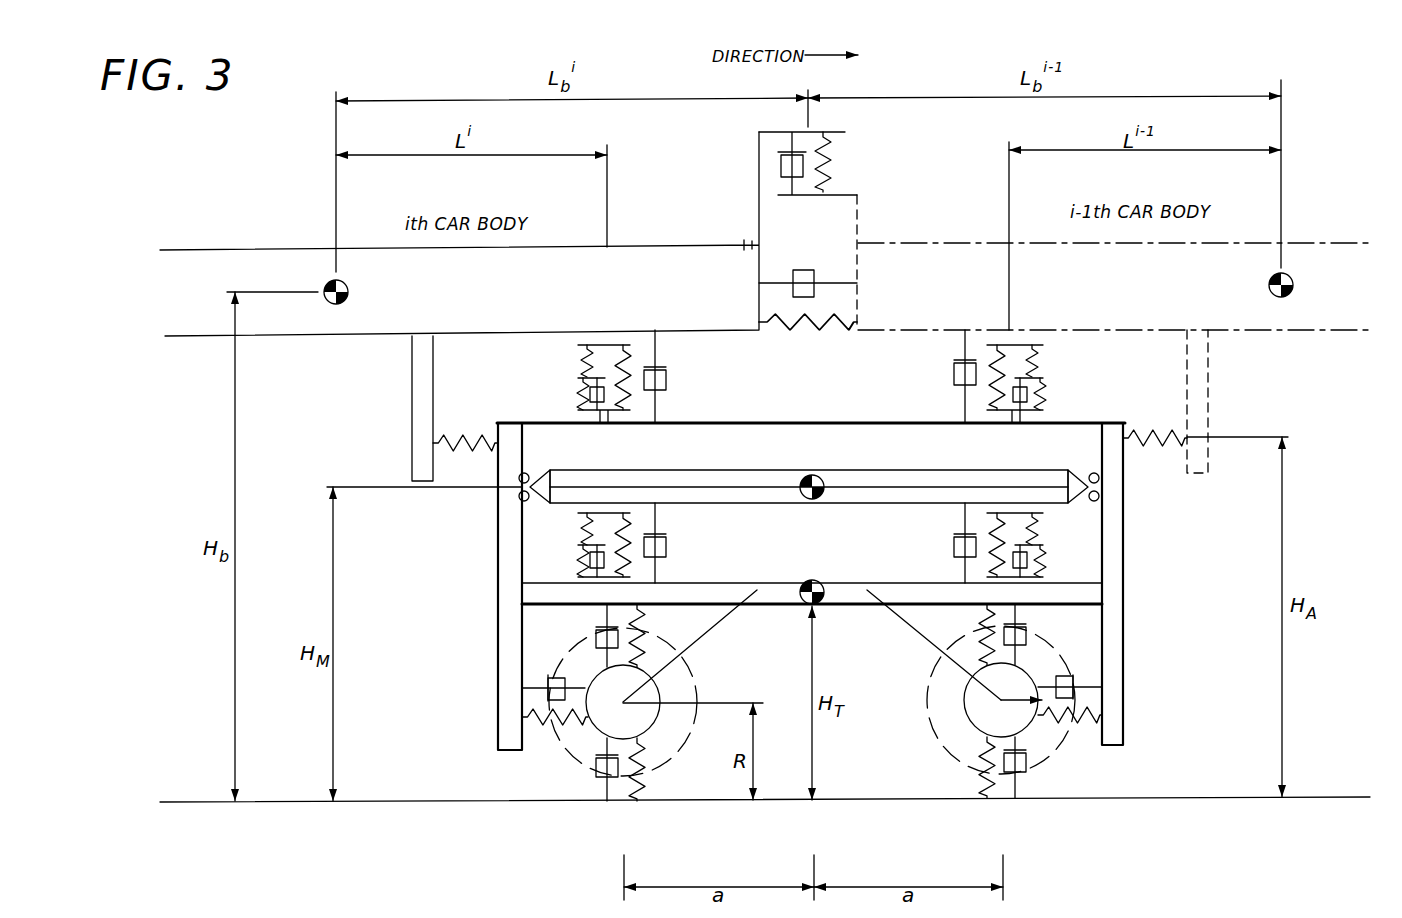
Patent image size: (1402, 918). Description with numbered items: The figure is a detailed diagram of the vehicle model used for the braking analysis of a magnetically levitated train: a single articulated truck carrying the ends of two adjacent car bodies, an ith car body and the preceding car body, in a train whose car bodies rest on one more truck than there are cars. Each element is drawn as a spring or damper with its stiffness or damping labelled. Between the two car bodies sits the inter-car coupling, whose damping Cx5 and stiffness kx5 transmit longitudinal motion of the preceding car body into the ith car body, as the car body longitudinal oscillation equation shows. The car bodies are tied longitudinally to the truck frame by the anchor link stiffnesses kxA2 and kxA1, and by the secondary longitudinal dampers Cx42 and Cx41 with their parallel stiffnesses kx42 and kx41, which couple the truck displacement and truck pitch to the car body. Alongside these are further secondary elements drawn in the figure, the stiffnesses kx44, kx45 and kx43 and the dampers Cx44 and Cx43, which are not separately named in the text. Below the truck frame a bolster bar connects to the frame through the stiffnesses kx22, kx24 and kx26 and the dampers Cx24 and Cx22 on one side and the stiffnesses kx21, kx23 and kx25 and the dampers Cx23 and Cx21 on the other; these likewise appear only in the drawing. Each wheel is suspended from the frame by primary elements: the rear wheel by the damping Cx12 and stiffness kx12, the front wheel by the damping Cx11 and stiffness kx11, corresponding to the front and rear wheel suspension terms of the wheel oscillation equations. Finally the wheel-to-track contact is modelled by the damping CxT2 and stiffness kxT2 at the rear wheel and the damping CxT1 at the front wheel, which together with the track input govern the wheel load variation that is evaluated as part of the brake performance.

The inter-car coupling damping Cx5 is at (781, 163).
The inter-car coupling stiffness kx5 is at (833, 160).
The rear anchor link stiffness kxA2 is at (462, 440).
The front anchor link stiffness kxA1 is at (1200, 428).
The secondary suspension spring kx44 is at (585, 364).
The secondary suspension spring kx45 is at (583, 396).
The secondary suspension damper Cx44 is at (604, 345).
The rear secondary longitudinal stiffness kx42 is at (625, 350).
The rear secondary longitudinal damping Cx42 is at (664, 372).
The front secondary longitudinal stiffness kx41 is at (996, 350).
The secondary suspension spring kx43 is at (1040, 362).
The secondary suspension damper Cx43 is at (1030, 348).
The front secondary longitudinal damping Cx41 is at (954, 372).
The bolster suspension spring kx22 is at (630, 526).
The bolster suspension spring kx24 is at (587, 522).
The bolster suspension spring kx26 is at (590, 558).
The bolster suspension damper Cx24 is at (594, 574).
The bolster suspension damper Cx22 is at (666, 547).
The bolster suspension spring kx21 is at (1000, 526).
The bolster suspension spring kx23 is at (1036, 522).
The bolster suspension spring kx25 is at (1040, 556).
The bolster suspension damper Cx23 is at (1028, 570).
The bolster suspension damper Cx21 is at (954, 548).
The rear wheel primary damping Cx12 is at (596, 638).
The rear wheel primary stiffness kx12 is at (540, 718).
The rear wheel track-contact damping CxT2 is at (600, 778).
The rear wheel track-contact stiffness kxT2 is at (646, 790).
The front wheel primary damping Cx11 is at (1026, 637).
The front wheel primary stiffness kx11 is at (1090, 716).
The front wheel track-contact damping CxT1 is at (1027, 778).